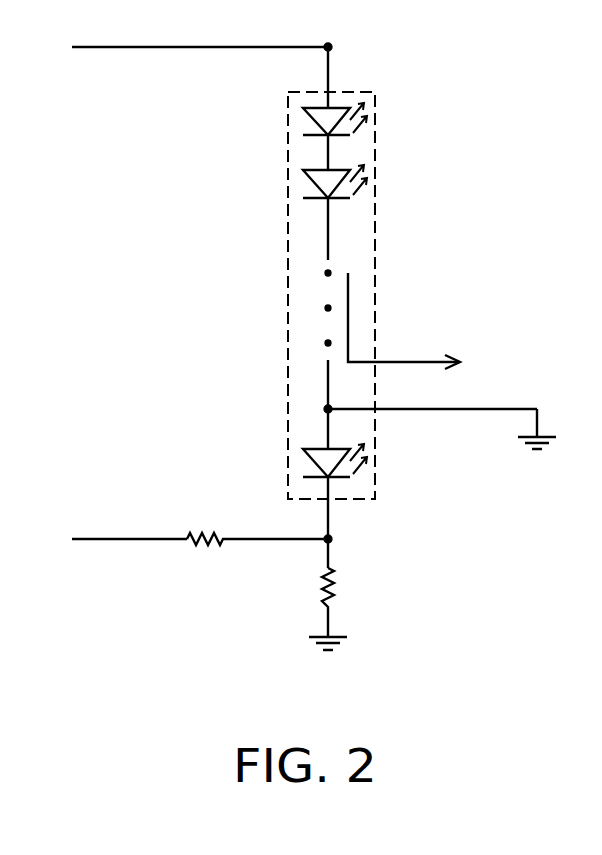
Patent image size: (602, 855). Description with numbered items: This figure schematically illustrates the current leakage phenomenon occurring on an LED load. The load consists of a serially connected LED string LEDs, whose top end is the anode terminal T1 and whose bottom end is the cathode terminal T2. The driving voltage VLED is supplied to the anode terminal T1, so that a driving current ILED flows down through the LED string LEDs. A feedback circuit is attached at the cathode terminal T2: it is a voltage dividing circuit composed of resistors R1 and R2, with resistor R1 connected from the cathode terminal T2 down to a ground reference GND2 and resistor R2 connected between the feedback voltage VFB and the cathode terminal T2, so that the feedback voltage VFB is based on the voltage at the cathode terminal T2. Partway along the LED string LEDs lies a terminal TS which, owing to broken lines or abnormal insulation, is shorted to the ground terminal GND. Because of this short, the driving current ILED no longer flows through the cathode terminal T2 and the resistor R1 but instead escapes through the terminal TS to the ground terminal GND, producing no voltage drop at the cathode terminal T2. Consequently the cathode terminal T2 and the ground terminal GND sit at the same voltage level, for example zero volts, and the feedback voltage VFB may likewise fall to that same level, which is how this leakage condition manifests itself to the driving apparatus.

The anode terminal T1 is at (343, 72).
The cathode terminal T2 is at (343, 548).
The terminal TS is at (430, 396).
The resistor R1 is at (342, 602).
The resistor R2 is at (257, 558).
The LED string LEDs is at (376, 222).
The driving current ILED is at (404, 321).
The driving voltage VLED is at (175, 48).
The feedback voltage VFB is at (109, 540).
The ground terminal GND is at (540, 450).
The ground GND2 is at (329, 662).